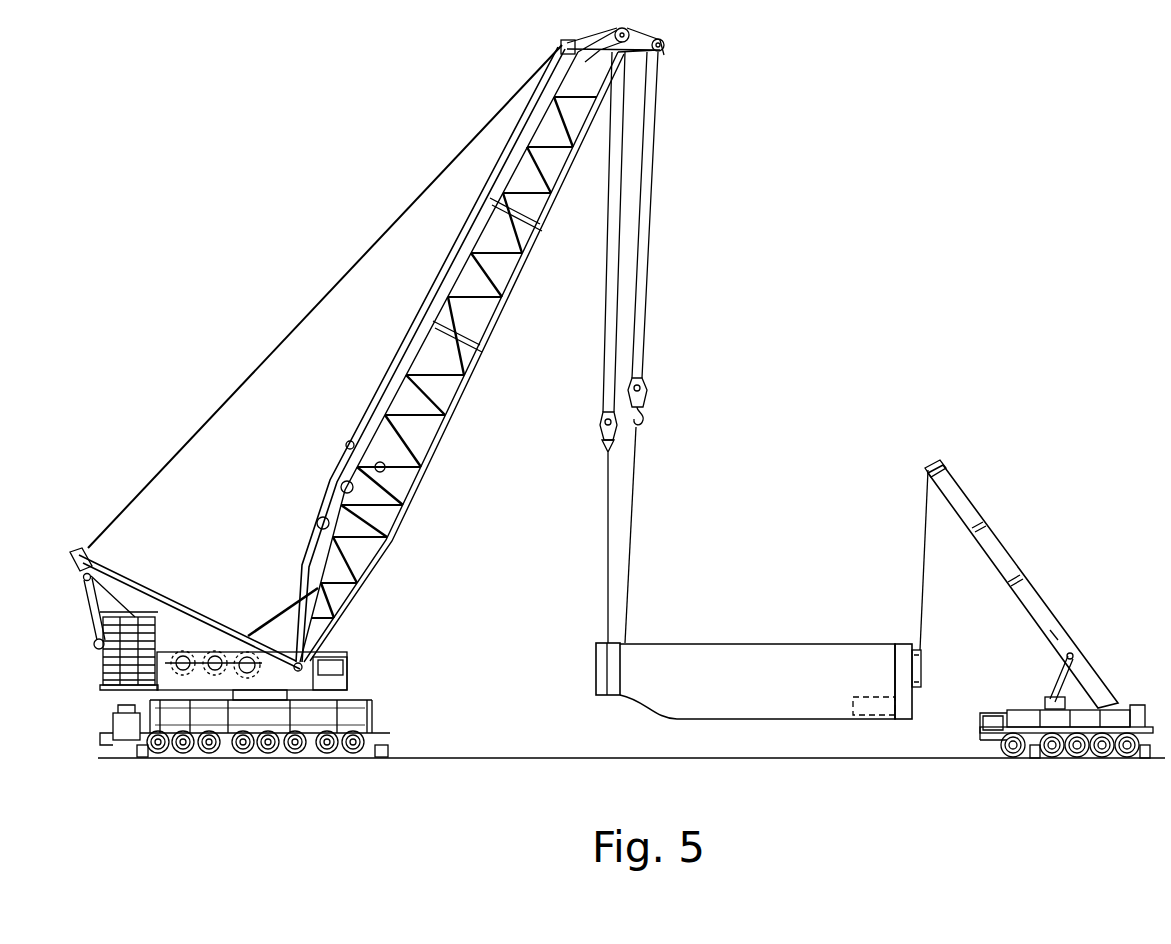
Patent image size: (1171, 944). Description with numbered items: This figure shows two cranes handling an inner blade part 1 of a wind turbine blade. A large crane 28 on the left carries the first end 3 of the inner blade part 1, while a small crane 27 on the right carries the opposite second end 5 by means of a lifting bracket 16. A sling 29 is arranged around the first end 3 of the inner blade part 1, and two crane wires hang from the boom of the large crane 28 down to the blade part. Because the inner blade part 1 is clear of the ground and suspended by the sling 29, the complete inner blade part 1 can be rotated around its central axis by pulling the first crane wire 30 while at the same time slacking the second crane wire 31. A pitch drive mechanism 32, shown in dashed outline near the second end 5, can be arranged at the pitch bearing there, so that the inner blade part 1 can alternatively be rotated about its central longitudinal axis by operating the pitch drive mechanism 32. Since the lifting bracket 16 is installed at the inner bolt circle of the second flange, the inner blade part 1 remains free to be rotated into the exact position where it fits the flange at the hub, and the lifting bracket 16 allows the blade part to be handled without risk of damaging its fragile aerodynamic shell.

The inner blade part 1 is at (768, 652).
The first end 3 is at (600, 668).
The second end 5 is at (903, 707).
The lifting bracket 16 is at (920, 663).
The small crane 27 is at (995, 550).
The large crane 28 is at (430, 452).
The sling 29 is at (633, 503).
The first crane wire 30 is at (603, 298).
The second crane wire 31 is at (650, 255).
The pitch drive mechanism 32 is at (865, 715).